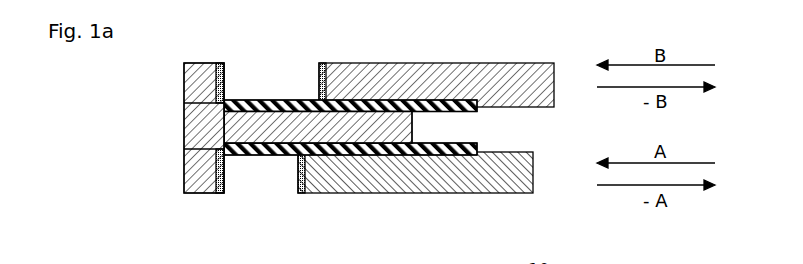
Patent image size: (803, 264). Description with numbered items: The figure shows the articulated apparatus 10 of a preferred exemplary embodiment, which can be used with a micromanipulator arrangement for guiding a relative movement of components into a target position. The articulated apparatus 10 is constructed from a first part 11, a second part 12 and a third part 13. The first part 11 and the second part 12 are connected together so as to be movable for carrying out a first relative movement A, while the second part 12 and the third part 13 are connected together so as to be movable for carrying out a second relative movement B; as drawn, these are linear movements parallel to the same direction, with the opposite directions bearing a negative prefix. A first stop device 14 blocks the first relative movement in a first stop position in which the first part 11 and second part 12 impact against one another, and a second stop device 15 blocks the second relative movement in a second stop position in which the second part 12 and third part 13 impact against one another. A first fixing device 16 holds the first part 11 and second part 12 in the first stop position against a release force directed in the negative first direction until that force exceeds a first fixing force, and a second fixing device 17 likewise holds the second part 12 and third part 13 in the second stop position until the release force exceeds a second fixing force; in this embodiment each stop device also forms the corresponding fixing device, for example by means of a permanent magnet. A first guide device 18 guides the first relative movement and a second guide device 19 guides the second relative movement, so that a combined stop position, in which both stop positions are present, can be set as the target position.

The articulated apparatus 10 is at (143, 215).
The first part 11 is at (520, 196).
The second part 12 is at (183, 80).
The third part 13 is at (443, 63).
The first stop device 14 is at (223, 182).
The second stop device 15 is at (223, 86).
The first fixing device 16 is at (298, 170).
The second fixing device 17 is at (317, 72).
The first guide device 18 is at (398, 152).
The second guide device 19 is at (418, 110).